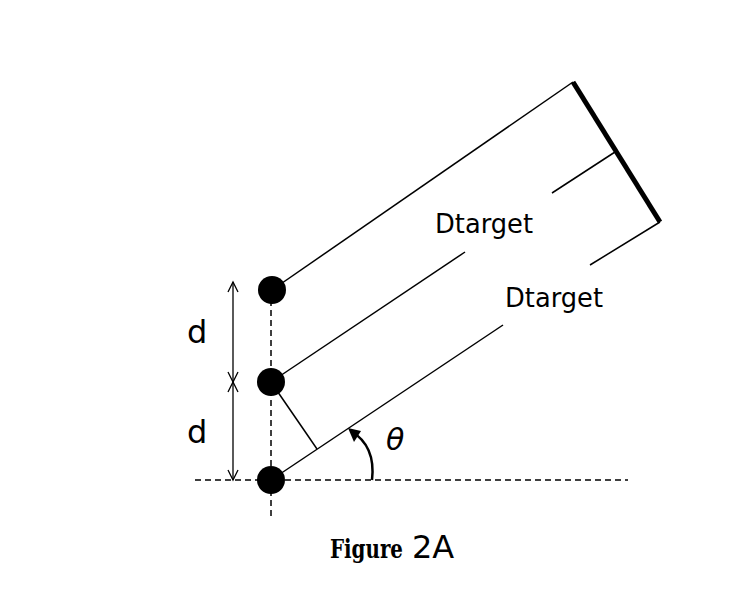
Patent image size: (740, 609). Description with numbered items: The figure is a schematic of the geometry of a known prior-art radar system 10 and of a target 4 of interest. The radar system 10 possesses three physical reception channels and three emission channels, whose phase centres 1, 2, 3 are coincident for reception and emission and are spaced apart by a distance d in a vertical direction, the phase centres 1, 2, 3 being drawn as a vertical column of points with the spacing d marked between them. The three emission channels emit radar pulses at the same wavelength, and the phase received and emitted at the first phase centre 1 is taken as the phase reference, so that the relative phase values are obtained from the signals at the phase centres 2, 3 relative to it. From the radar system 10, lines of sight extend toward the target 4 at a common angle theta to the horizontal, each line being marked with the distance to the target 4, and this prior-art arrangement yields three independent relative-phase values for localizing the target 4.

The phase centre 1 is at (255, 492).
The phase centre 2 is at (262, 382).
The phase centre 3 is at (262, 282).
The target 4 is at (573, 82).
The radar system 10 is at (255, 235).